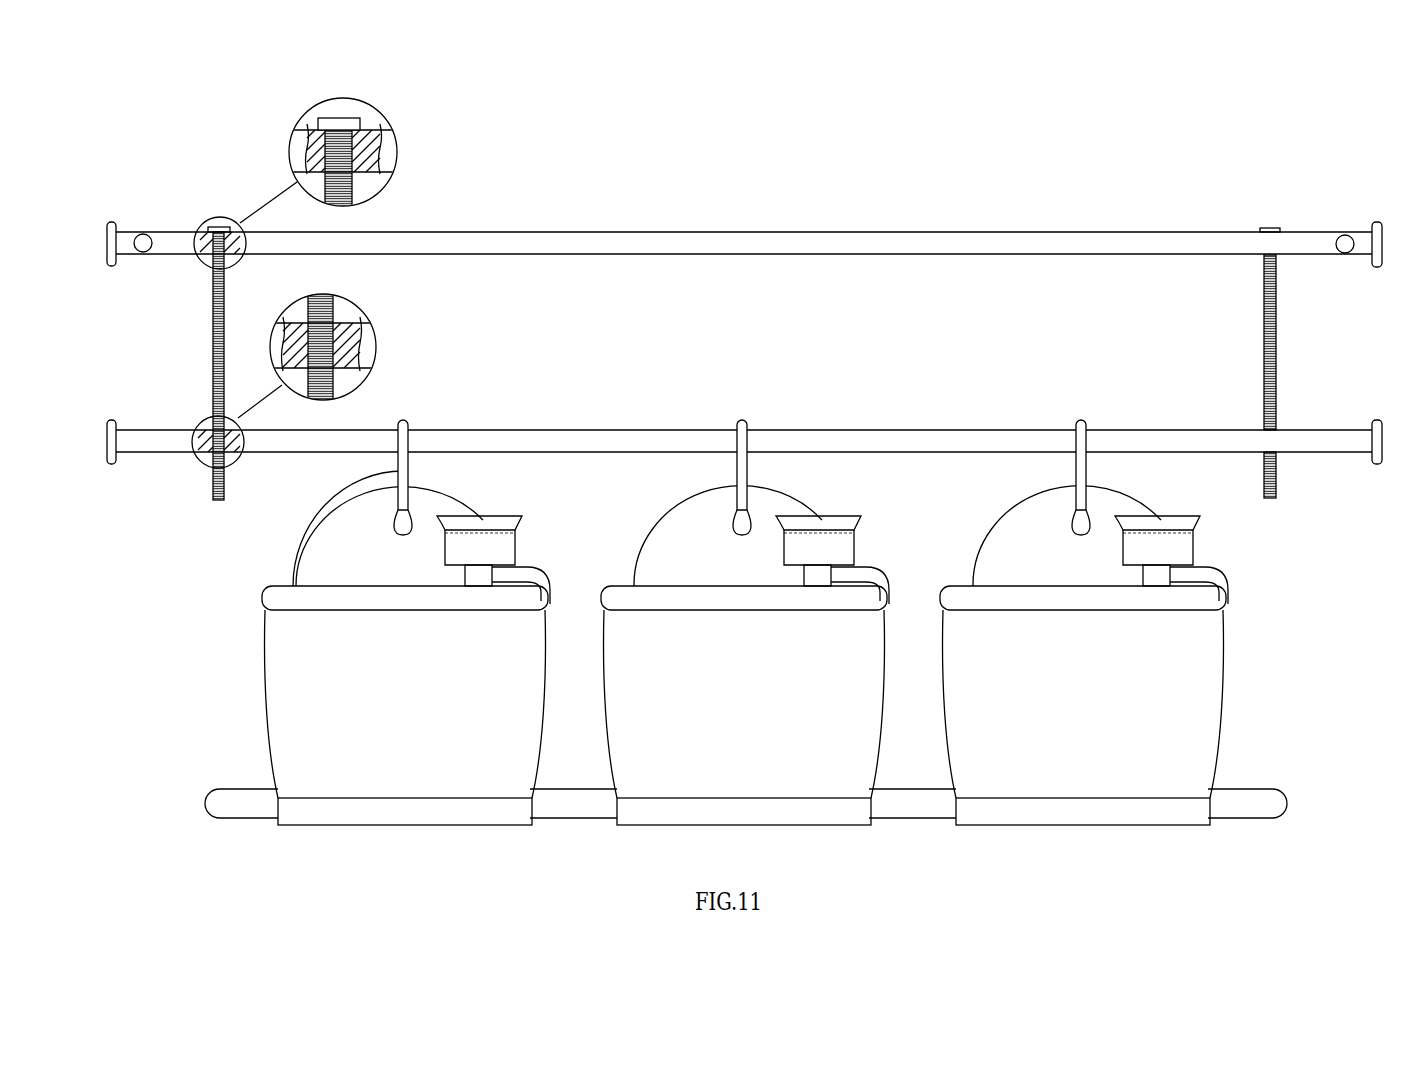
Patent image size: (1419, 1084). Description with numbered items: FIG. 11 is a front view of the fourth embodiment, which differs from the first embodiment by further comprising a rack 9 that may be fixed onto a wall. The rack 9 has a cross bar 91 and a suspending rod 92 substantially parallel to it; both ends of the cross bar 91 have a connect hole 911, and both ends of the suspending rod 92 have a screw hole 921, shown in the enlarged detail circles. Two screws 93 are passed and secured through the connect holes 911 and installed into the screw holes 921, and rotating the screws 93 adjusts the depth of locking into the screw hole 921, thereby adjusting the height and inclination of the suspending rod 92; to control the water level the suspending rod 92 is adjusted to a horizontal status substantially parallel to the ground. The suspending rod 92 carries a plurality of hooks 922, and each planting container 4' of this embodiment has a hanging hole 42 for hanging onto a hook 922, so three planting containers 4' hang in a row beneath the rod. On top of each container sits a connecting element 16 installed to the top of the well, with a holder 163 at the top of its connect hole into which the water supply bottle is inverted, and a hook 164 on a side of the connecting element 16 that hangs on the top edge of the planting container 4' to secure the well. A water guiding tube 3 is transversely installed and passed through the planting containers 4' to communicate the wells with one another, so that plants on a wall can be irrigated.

The rack 9 is at (746, 317).
The cross bar 91 is at (855, 243).
The suspending rod 92 is at (1310, 445).
The screw 93 is at (216, 331).
The connect hole 911 is at (296, 160).
The screw hole 921 is at (280, 388).
The hook 922 is at (332, 382).
The water guiding tube 3 is at (210, 803).
The planting container 4' is at (391, 739).
The hanging hole 42 is at (403, 537).
The connecting element 16 is at (478, 578).
The holder 163 is at (438, 522).
The hook 164 is at (550, 585).